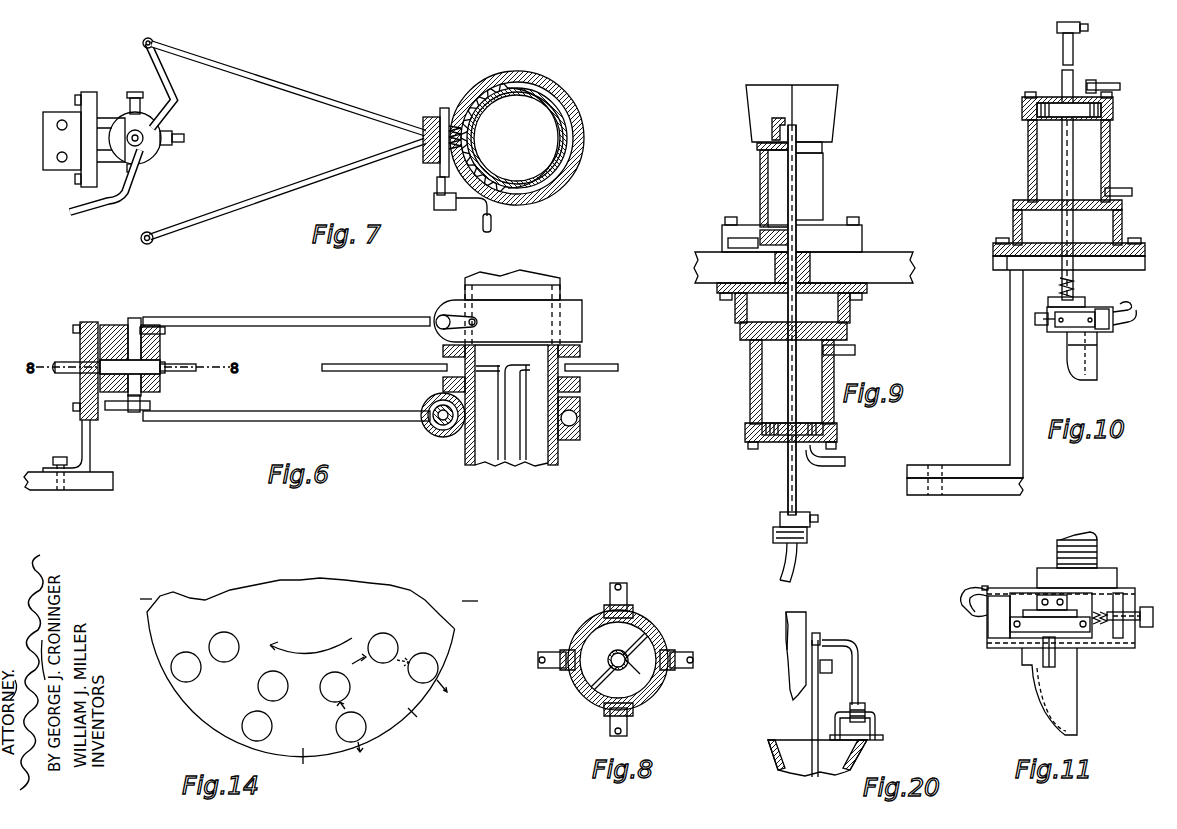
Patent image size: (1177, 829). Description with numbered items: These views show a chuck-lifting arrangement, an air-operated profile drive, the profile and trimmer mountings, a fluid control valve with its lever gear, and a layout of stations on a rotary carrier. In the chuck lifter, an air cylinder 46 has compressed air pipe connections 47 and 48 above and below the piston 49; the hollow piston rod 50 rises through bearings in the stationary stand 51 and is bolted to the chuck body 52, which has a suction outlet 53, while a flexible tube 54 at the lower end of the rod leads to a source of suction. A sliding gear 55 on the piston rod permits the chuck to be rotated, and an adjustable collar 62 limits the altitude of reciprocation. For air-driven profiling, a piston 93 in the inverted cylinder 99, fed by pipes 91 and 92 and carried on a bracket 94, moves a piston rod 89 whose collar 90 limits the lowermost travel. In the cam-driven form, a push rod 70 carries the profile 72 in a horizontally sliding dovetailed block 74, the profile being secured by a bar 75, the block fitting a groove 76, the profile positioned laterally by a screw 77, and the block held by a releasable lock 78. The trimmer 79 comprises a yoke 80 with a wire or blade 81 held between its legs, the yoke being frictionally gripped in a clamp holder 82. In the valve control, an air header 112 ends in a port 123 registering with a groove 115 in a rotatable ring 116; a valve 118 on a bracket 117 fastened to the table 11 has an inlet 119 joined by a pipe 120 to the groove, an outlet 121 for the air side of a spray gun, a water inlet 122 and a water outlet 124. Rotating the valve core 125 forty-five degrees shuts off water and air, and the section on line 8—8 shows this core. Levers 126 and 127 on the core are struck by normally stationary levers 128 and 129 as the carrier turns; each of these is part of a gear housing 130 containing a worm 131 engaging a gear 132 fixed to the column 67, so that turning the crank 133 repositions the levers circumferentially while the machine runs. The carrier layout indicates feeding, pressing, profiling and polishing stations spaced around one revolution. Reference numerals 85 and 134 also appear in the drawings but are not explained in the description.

In FIG. 6, the section line 8 is at (109, 367).
In FIG. 9, the table 11 is at (880, 263).
In FIG. 10, the table 11 is at (958, 494).
In FIG. 9, the air cylinder 46 is at (750, 388).
In FIG. 9, the compressed air pipe connection 47 is at (854, 349).
In FIG. 9, the compressed air pipe connection 48 is at (842, 459).
In FIG. 9, the piston 49 is at (783, 423).
In FIG. 9, the hollow piston rod 50 is at (787, 400).
In FIG. 9, the stationary stand 51 is at (760, 190).
In FIG. 9, the chuck body 52 is at (840, 133).
In FIG. 9, the outlet for suction 53 is at (787, 118).
In FIG. 9, the flexible tube 54 is at (797, 564).
In FIG. 9, the sliding gear 55 is at (745, 236).
In FIG. 9, the adjustable collar 62 is at (808, 511).
In FIG. 7, the column 67 is at (478, 157).
In FIG. 6, the column 67 is at (470, 466).
In FIG. 11, the push rod 70 is at (1057, 544).
In FIG. 10, the profile 72 is at (1089, 367).
In FIG. 11, the profile 72 is at (1078, 691).
In FIG. 20, the sliding dovetailed block 74 is at (805, 633).
In FIG. 11, the sliding dovetailed block 74 is at (993, 628).
In FIG. 11, the bar 75 is at (1030, 632).
In FIG. 20, the groove 76 is at (807, 692).
In FIG. 11, the screw 77 is at (1150, 627).
In FIG. 11, the releasable lock 78 is at (978, 590).
In FIG. 20, the trimmer 79 is at (862, 677).
In FIG. 20, the yoke 80 is at (877, 720).
In FIG. 20, the wire or blade 81 is at (873, 745).
In FIG. 20, the clamp holder 82 is at (866, 706).
In FIG. 11, the cutting edge 85 is at (1040, 718).
In FIG. 10, the piston rod 89 is at (1075, 283).
In FIG. 10, the collar 90 is at (1057, 34).
In FIG. 14, the collar 90 is at (303, 682).
In FIG. 10, the pipe 91 is at (1089, 84).
In FIG. 10, the pipe 92 is at (1108, 190).
In FIG. 10, the piston 93 is at (1047, 117).
In FIG. 10, the bracket 94 is at (993, 297).
In FIG. 10, the inverted cylinder 99 is at (1105, 156).
In FIG. 6, the air header 112 is at (512, 462).
In FIG. 6, the groove 115 is at (443, 366).
In FIG. 6, the rotatable ring 116 is at (443, 388).
In FIG. 7, the bracket 117 is at (50, 170).
In FIG. 6, the bracket 117 is at (88, 466).
In FIG. 7, the valve 118 is at (154, 154).
In FIG. 6, the valve 118 is at (113, 342).
In FIG. 6, the inlet 119 is at (190, 363).
In FIG. 8, the inlet 119 is at (656, 660).
In FIG. 6, the pipe 120 is at (323, 362).
In FIG. 8, the pipe 120 is at (677, 657).
In FIG. 8, the outlet 121 is at (624, 726).
In FIG. 8, the inlet 122 is at (623, 596).
In FIG. 6, the port 123 is at (472, 368).
In FIG. 8, the outlet 124 is at (550, 664).
In FIG. 8, the valve core 125 is at (612, 640).
In FIG. 7, the lever 126 is at (175, 98).
In FIG. 6, the lever 126 is at (170, 333).
In FIG. 7, the lever 127 is at (130, 200).
In FIG. 6, the lever 127 is at (108, 411).
In FIG. 7, the lever 128 is at (272, 82).
In FIG. 6, the lever 128 is at (247, 319).
In FIG. 7, the lever 129 is at (240, 200).
In FIG. 6, the lever 129 is at (253, 418).
In FIG. 7, the gear housing 130 is at (492, 74).
In FIG. 6, the gear housing 130 is at (582, 326).
In FIG. 7, the worm 131 is at (433, 117).
In FIG. 6, the worm 131 is at (433, 436).
In FIG. 7, the gear 132 is at (495, 98).
In FIG. 7, the crank 133 is at (457, 212).
In FIG. 6, the crank 133 is at (478, 322).
In FIG. 6, the collar 134 is at (580, 352).